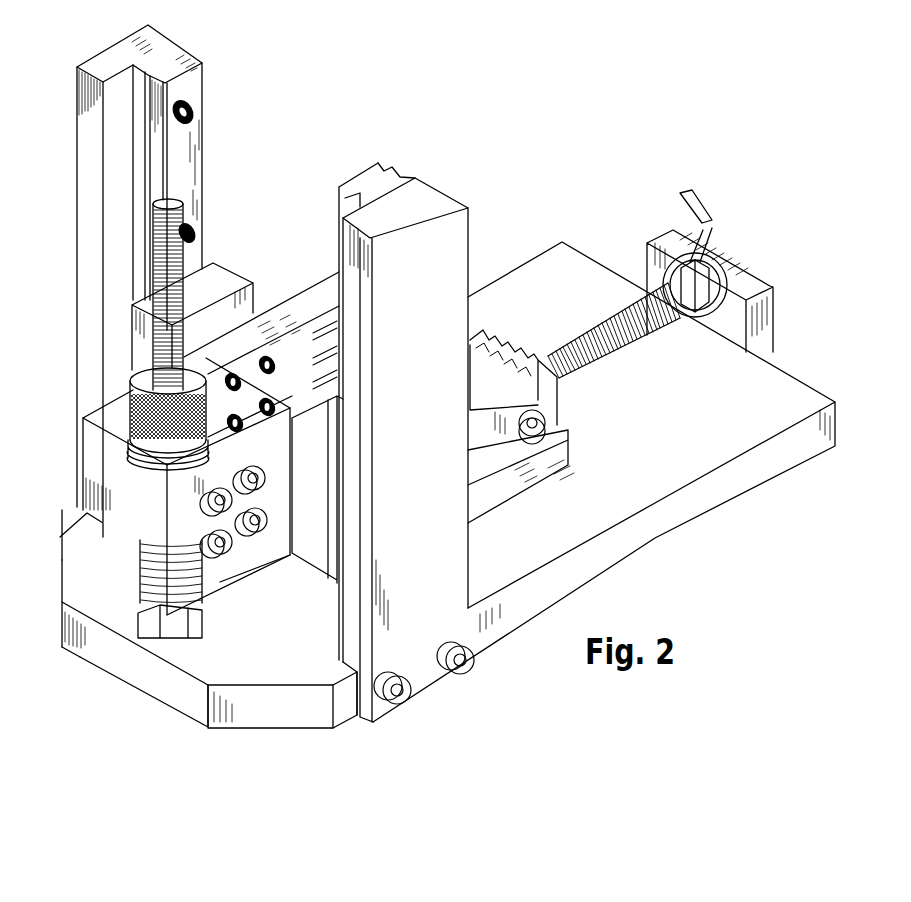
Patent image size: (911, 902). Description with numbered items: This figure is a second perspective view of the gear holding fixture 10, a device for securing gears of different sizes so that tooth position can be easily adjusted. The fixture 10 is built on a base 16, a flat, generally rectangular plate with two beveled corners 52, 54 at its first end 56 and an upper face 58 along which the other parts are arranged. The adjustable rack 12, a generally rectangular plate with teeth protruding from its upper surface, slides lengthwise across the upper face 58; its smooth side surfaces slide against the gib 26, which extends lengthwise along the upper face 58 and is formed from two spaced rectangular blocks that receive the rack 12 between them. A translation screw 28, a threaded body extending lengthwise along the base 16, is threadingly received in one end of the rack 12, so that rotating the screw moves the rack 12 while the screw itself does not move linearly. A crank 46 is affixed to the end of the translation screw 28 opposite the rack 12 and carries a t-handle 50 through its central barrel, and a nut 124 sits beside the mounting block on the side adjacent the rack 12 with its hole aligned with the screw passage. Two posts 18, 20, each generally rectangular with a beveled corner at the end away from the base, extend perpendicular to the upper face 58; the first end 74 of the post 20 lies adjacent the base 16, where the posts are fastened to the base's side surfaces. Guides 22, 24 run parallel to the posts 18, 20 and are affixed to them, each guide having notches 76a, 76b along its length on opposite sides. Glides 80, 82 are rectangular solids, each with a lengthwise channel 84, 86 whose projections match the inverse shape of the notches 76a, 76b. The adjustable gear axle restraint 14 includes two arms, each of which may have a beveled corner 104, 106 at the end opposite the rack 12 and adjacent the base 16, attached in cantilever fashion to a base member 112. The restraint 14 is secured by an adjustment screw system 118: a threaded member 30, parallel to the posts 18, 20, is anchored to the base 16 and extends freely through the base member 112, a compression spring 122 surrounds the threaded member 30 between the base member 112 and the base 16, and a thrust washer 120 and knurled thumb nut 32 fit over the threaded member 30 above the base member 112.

The gear holding fixture 10 is at (702, 576).
The adjustable rack 12 is at (538, 395).
The adjustable gear axle restraint 14 is at (300, 283).
The base 16 is at (287, 707).
The post 18 is at (453, 228).
The post 20 is at (112, 65).
The guide 22 is at (370, 180).
The guide 24 is at (170, 60).
The gib 26 is at (495, 495).
The translation screw 28 is at (657, 327).
The threaded member 30 is at (153, 257).
The thumb nut 32 is at (140, 387).
The crank 46 is at (703, 210).
The t-handle 50 is at (690, 190).
The beveled corner 52 is at (257, 727).
The beveled corner 54 is at (60, 578).
The first end 56 is at (155, 675).
The upper face 58 is at (287, 652).
The first end 74 is at (73, 510).
The notch 76a is at (390, 172).
The notch 76b is at (358, 202).
The glide 80 is at (313, 547).
The glide 82 is at (226, 277).
The channel 84 is at (310, 403).
The channel 86 is at (200, 287).
The beveled corner 104 is at (200, 573).
The beveled corner 106 is at (80, 512).
The base member 112 is at (165, 468).
The adjustment screw system 118 is at (66, 392).
The thrust washer 120 is at (150, 468).
The compression spring 122 is at (145, 537).
The nut 124 is at (673, 243).